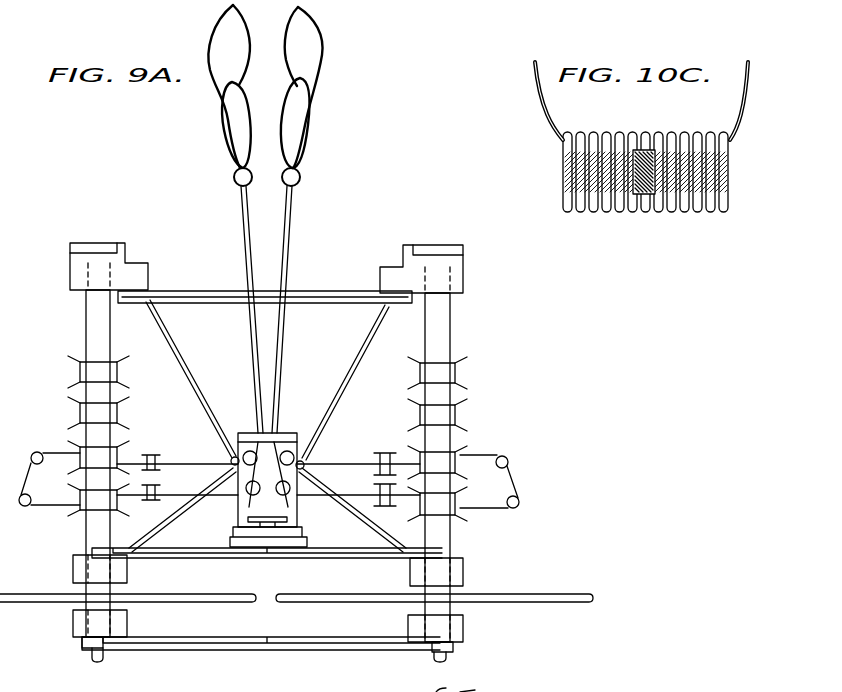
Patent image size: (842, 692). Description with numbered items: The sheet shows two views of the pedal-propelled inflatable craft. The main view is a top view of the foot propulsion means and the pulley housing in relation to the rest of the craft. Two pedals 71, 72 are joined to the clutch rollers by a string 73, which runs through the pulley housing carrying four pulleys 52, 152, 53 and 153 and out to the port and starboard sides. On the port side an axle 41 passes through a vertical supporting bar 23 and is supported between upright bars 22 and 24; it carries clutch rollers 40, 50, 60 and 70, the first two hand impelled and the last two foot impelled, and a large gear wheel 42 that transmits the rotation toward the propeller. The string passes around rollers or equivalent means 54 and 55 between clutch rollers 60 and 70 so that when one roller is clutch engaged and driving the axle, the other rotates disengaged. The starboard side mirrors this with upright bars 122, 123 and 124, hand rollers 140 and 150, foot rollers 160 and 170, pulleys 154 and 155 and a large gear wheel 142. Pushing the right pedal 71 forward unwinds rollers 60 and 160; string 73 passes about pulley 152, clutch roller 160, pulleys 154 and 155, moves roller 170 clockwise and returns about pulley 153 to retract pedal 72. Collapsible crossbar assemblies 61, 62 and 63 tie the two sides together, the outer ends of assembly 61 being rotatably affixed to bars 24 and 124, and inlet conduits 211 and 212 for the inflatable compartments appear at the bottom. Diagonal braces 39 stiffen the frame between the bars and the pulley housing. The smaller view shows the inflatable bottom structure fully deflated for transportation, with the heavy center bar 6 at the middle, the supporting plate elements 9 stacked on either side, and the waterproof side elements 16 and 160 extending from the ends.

In FIG. 9A, the pedal 72 is at (230, 95).
In FIG. 9A, the pedal 71 is at (303, 96).
In FIG. 9A, the string 73 is at (283, 394).
In FIG. 9A, the vertical supporting bar 22 is at (142, 268).
In FIG. 9A, the vertical supporting bar 122 is at (384, 268).
In FIG. 9A, the collapsible crossbar assembly 63 is at (206, 290).
In FIG. 9A, the axle 41 is at (92, 326).
In FIG. 9A, the clutch roller 40 is at (80, 372).
In FIG. 9A, the clutch roller 50 is at (80, 413).
In FIG. 9A, the clutch roller 60 is at (120, 456).
In FIG. 9A, the clutch roller 70 is at (82, 509).
In FIG. 9A, the roller 54 is at (31, 456).
In FIG. 9A, the roller 55 is at (22, 506).
In FIG. 9A, the pulley 52 is at (250, 451).
In FIG. 9A, the pulley 152 is at (288, 451).
In FIG. 9A, the pulley 53 is at (250, 495).
In FIG. 9A, the pulley 153 is at (286, 495).
In FIG. 9A, the brace 39 is at (184, 349).
In FIG. 9A, the vertical supporting bar 23 is at (73, 566).
In FIG. 9A, the vertical supporting bar 24 is at (73, 630).
In FIG. 9A, the vertical supporting bar 123 is at (463, 575).
In FIG. 9A, the vertical supporting bar 124 is at (463, 633).
In FIG. 9A, the collapsible crossbar assembly 62 is at (224, 563).
In FIG. 9A, the collapsible crossbar assembly 61 is at (179, 649).
In FIG. 9A, the large gear wheel 42 is at (36, 602).
In FIG. 9A, the large gear wheel 142 is at (518, 603).
In FIG. 9A, the clutch roller 140 is at (410, 379).
In FIG. 9A, the clutch roller 150 is at (455, 420).
In FIG. 9A, the clutch roller 160 is at (420, 457).
In FIG. 10C, the clutch roller 160 is at (746, 113).
In FIG. 9A, the clutch roller 170 is at (420, 505).
In FIG. 9A, the pulley 154 is at (508, 459).
In FIG. 9A, the pulley 155 is at (518, 504).
In FIG. 9A, the inlet conduit 211 is at (451, 680).
In FIG. 9A, the inlet conduit 212 is at (468, 691).
In FIG. 10C, the supporting plate element 9 is at (566, 182).
In FIG. 10C, the heavy center bar 6 is at (646, 195).
In FIG. 10C, the waterproof side element 16 is at (542, 108).